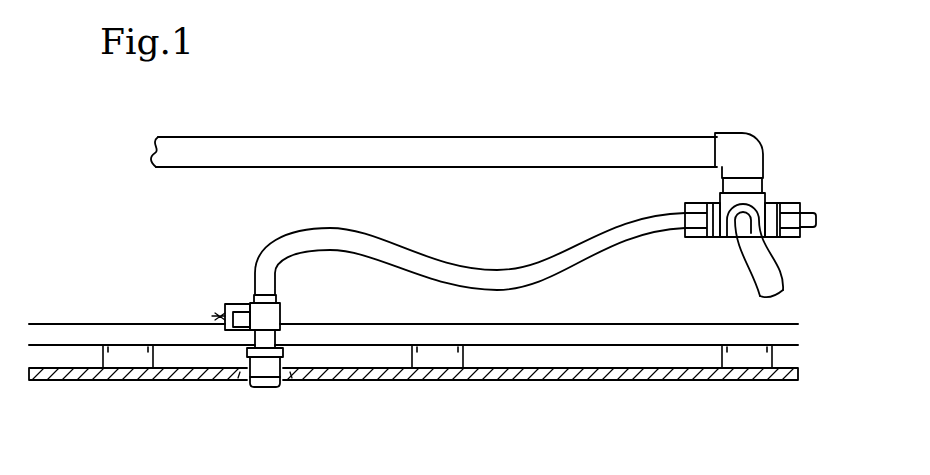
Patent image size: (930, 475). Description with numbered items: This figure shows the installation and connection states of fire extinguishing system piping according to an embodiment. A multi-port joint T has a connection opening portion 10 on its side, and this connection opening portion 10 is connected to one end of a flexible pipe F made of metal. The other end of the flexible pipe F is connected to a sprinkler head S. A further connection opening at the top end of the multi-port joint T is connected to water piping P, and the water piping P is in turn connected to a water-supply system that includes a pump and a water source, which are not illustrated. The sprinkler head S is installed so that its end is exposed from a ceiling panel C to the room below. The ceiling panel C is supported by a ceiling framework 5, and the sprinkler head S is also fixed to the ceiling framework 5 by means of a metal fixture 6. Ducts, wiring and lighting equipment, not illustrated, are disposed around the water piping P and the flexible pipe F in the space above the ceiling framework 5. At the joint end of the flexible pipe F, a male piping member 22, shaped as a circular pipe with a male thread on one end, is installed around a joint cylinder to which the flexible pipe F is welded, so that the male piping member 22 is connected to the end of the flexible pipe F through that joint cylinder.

The water piping P is at (508, 155).
The connection opening portion 10 is at (714, 203).
The male piping member 22 is at (695, 203).
The multi-port joint T is at (760, 198).
The flexible pipe F is at (755, 248).
The metal fixture 6 is at (272, 310).
The ceiling framework 5 is at (143, 363).
The ceiling panel C is at (368, 372).
The sprinkler head S is at (262, 380).